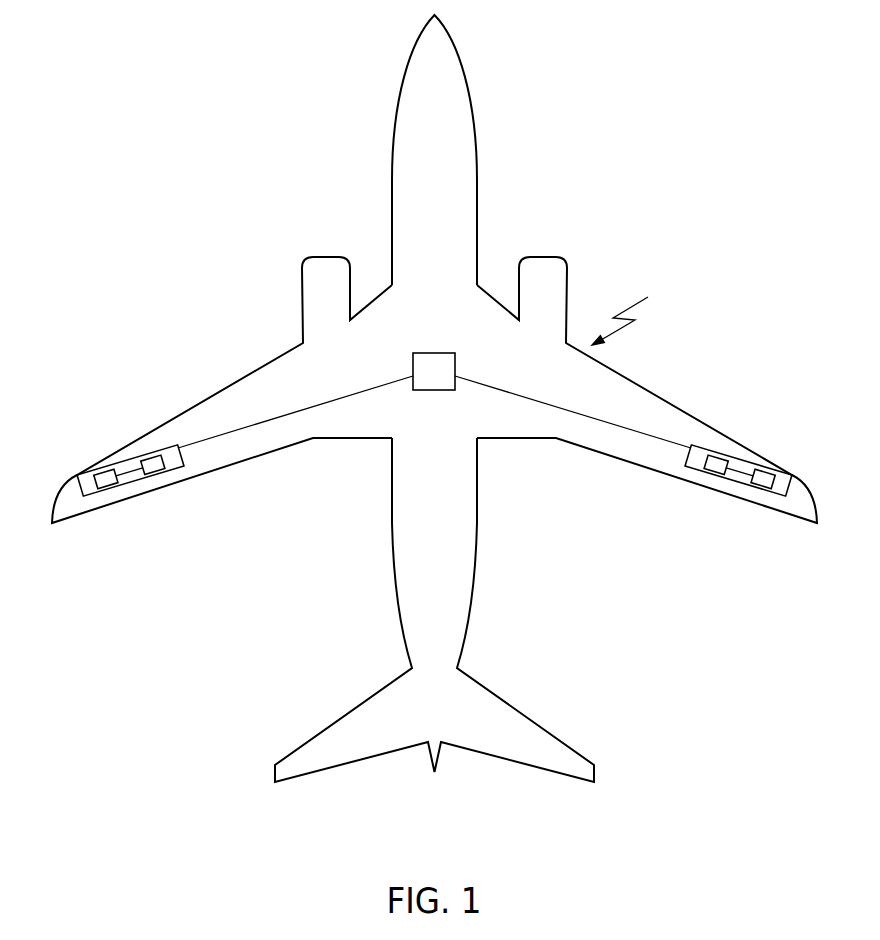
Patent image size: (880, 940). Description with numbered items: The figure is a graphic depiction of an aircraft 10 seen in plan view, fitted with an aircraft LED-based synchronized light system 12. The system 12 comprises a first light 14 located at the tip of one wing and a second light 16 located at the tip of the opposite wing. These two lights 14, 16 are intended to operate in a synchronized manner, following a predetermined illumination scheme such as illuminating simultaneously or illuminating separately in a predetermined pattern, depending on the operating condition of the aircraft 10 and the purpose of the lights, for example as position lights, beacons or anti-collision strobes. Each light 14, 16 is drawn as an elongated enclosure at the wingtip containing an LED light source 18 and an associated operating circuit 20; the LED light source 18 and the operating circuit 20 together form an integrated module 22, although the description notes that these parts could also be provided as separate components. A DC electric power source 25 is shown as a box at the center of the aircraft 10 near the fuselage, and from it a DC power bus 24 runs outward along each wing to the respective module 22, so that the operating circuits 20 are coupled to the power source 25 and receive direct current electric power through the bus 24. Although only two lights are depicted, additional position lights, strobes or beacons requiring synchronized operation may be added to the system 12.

The aircraft 10 is at (470, 103).
The aircraft LED-based synchronized light system 12 is at (633, 314).
The first light 14 is at (103, 497).
The second light 16 is at (762, 493).
The LED light source 18 is at (103, 474).
The operating circuit 20 is at (160, 474).
The integrated module 22 is at (130, 456).
The DC power bus 24 is at (337, 400).
The DC electric power source 25 is at (432, 353).